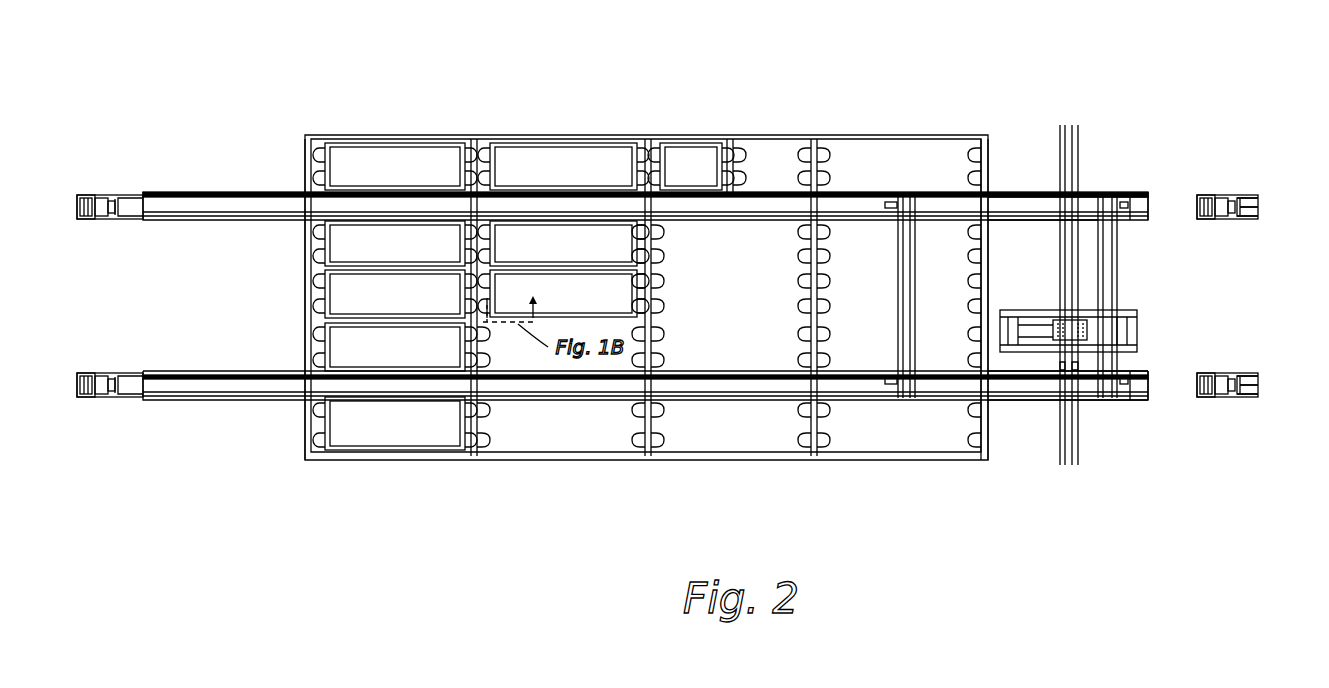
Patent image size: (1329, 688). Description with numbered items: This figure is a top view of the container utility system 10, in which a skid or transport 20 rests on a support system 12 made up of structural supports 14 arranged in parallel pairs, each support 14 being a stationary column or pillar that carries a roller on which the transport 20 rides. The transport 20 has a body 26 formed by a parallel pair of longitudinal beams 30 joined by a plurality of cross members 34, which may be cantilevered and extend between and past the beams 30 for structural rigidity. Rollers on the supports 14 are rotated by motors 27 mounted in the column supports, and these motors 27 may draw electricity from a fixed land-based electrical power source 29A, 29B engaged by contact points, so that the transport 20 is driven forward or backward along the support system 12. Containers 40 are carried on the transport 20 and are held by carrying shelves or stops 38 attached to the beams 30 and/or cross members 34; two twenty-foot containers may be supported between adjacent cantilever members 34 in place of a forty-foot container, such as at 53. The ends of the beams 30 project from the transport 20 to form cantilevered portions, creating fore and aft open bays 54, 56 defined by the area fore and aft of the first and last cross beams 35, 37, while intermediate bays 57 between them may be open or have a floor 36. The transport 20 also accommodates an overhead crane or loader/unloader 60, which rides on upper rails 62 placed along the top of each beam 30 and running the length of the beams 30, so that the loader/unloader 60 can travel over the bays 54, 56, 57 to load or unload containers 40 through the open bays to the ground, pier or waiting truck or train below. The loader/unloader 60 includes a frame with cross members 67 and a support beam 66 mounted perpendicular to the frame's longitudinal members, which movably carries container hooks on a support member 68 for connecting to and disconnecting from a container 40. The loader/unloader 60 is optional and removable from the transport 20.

The container utility system 10 is at (208, 68).
The support system 12 is at (89, 184).
The structural support 14 is at (93, 222).
The transport 20 is at (250, 195).
The body 26 is at (562, 135).
The motor 27 is at (1258, 207).
The electrical power source 29A is at (1248, 218).
The electrical power source 29B is at (1248, 197).
The longitudinal beam 30 is at (202, 193).
The cross member 34 is at (477, 460).
The first cross beam 35 is at (305, 241).
The floor 36 is at (743, 306).
The last cross beam 37 is at (992, 240).
The stop 38 is at (665, 410).
The container 40 is at (383, 177).
The two 20 foot container location 53 is at (772, 160).
The fore open bay 54 is at (206, 306).
The aft open bay 56 is at (1020, 284).
The intermediate bay 57 is at (691, 306).
The loader/unloader 60 is at (1035, 197).
The upper rail 62 is at (1130, 205).
The support beam 66 is at (1075, 125).
The cross member 67 is at (1035, 380).
The support member 68 is at (1137, 334).